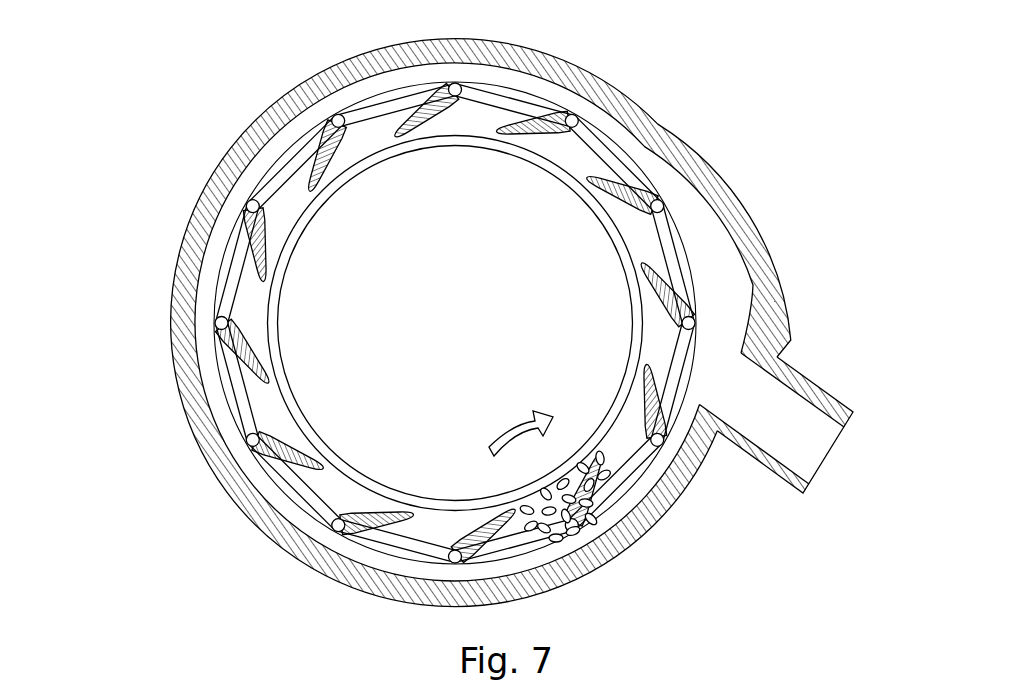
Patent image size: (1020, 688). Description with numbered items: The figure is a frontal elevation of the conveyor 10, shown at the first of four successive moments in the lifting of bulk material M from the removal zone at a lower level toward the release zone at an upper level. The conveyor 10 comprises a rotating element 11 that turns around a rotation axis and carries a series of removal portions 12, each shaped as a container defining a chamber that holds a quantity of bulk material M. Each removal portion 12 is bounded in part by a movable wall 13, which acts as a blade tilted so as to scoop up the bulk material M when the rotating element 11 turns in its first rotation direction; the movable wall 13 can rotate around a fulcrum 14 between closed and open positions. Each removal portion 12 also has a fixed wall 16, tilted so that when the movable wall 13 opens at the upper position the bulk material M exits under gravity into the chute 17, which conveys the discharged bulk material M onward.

The conveyor 10 is at (176, 113).
The rotating element 11 is at (247, 302).
The removal portion 12 is at (475, 117).
The movable wall 13 is at (363, 110).
The fulcrum 14 is at (657, 200).
The fixed wall 16 is at (213, 339).
The chute 17 is at (815, 455).
The bulk material M is at (553, 538).